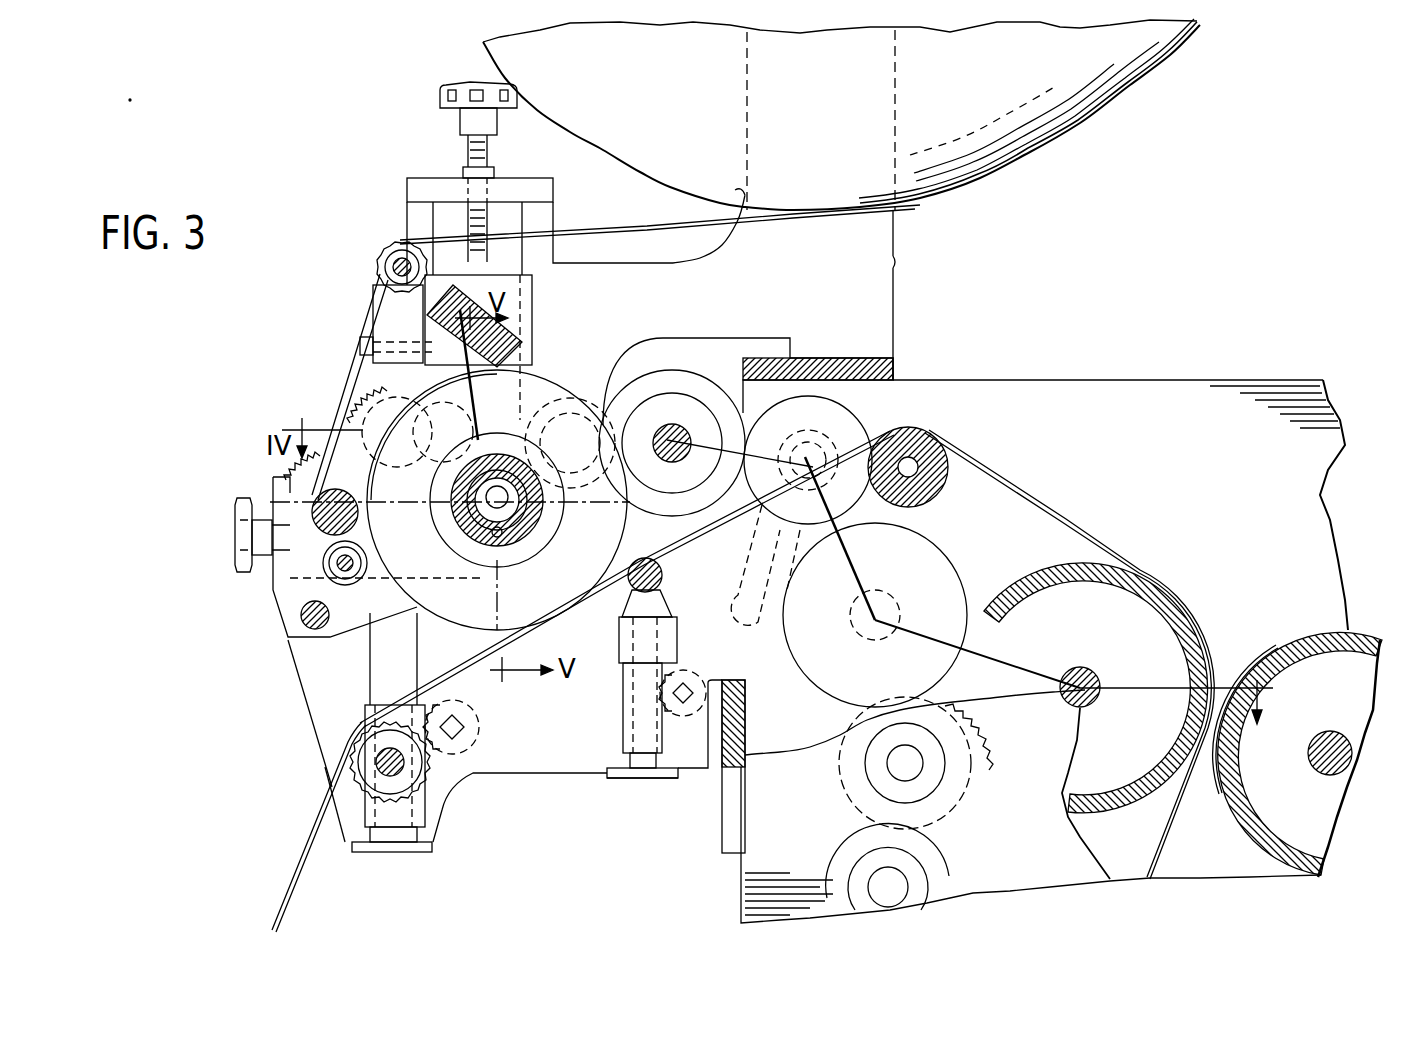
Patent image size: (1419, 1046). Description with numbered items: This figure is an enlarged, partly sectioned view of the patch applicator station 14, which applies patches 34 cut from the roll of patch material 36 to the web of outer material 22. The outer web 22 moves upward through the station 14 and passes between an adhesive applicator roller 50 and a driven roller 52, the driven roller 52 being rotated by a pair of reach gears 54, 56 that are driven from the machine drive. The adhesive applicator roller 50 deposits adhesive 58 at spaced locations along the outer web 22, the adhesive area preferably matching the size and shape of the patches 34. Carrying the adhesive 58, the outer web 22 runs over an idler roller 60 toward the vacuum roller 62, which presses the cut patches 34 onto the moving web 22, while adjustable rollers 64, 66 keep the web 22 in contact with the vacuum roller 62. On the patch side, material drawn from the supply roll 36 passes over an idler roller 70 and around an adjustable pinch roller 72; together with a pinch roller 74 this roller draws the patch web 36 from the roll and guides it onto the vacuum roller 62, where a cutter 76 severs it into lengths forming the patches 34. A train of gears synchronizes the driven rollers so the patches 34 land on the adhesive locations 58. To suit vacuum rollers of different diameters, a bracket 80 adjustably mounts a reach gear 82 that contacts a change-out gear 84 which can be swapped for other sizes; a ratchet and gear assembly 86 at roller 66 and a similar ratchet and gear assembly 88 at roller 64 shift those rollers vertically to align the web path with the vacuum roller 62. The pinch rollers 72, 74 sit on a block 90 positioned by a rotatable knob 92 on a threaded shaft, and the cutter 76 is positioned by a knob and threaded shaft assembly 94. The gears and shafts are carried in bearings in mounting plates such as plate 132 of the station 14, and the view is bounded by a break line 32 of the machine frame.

The patch applicator station 14 is at (1148, 302).
The web of outer material 22 is at (1162, 835).
The break line / housing 32 is at (1348, 632).
The patches 34 is at (318, 797).
The roll of patch material 36 is at (645, 226).
The adhesive applicator roller 50 is at (1302, 640).
The driven roller 52 is at (1102, 810).
The reach gear 54 is at (945, 815).
The reach gear 56 is at (950, 855).
The adhesive 58 is at (985, 470).
The idler roller 60 is at (935, 492).
The vacuum roller 62 is at (548, 385).
The adjustable roller 64 is at (676, 567).
The adjustable roller 66 is at (425, 766).
The idler roller 70 is at (390, 250).
The adjustable pinch roller 72 is at (322, 522).
The pinch roller 74 is at (330, 572).
The cutter 76 is at (505, 345).
The bracket 80 is at (768, 618).
The reach gear 82 is at (845, 413).
The change-out gear 84 is at (683, 372).
The ratchet and gear assembly 86 is at (445, 707).
The ratchet and gear assembly 88 is at (680, 672).
The block 90 is at (322, 495).
The rotatable knob 92 is at (240, 500).
The knob and threaded shaft assembly 94 is at (447, 93).
The mounting plate 132 is at (893, 262).